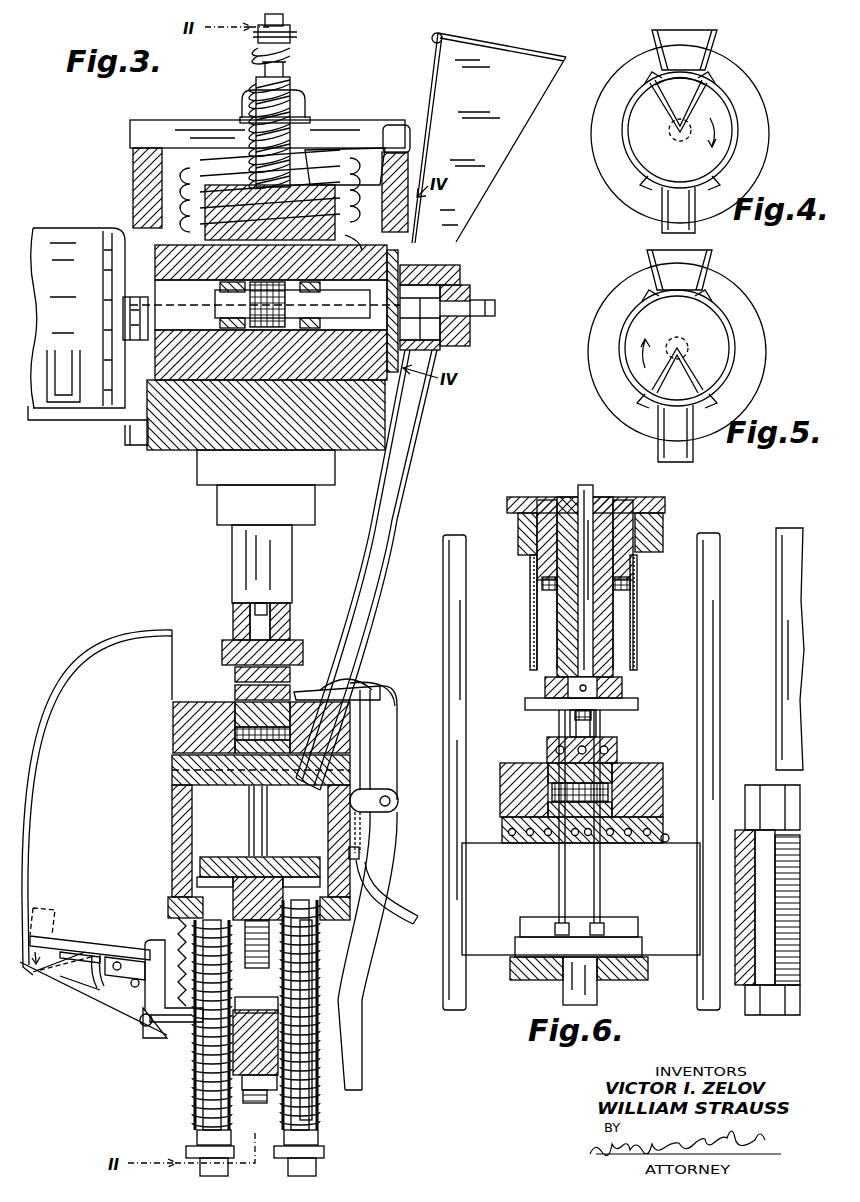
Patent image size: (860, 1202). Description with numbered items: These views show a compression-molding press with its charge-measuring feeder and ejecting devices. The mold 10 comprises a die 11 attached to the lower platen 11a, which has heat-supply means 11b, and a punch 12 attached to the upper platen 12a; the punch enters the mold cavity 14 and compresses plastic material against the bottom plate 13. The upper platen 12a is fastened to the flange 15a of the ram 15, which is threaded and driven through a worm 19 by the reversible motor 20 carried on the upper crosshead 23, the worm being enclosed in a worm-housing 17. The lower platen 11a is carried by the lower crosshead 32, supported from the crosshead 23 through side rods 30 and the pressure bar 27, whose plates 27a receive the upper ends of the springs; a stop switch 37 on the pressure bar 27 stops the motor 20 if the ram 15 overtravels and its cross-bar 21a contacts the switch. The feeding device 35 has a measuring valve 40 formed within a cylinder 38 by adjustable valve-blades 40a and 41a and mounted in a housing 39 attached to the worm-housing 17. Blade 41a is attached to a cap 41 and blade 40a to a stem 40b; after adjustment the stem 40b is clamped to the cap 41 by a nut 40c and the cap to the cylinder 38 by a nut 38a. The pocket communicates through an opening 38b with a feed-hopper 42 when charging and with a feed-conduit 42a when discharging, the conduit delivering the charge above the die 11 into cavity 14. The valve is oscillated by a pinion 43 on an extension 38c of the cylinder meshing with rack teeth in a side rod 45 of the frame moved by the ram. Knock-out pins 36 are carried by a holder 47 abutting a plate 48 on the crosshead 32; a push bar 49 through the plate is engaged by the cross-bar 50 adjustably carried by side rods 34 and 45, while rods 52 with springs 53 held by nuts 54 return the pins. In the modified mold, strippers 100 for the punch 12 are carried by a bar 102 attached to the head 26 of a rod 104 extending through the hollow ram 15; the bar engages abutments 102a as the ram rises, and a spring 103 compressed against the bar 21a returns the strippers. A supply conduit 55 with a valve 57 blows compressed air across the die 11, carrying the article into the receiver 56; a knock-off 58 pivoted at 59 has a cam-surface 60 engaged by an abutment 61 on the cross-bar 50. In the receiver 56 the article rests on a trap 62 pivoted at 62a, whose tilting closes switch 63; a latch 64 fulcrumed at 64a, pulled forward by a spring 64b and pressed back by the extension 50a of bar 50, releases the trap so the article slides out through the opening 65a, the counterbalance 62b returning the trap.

In FIG. 3, the mold 10 is at (158, 737).
In FIG. 6, the mold 10 is at (634, 760).
In FIG. 3, the die 11 is at (173, 720).
In FIG. 6, the die 11 is at (658, 770).
In FIG. 6, the lower platen 11a is at (668, 845).
In FIG. 6, the heat-supply means 11b is at (630, 845).
In FIG. 3, the punch 12 is at (240, 735).
In FIG. 6, the punch 12 is at (547, 752).
In FIG. 3, the upper platen 12a is at (232, 700).
In FIG. 6, the upper platen 12a is at (617, 742).
In FIG. 3, the bottom plate 13 is at (175, 745).
In FIG. 6, the bottom plate 13 is at (537, 845).
In FIG. 3, the mold cavity 14 is at (203, 702).
In FIG. 6, the mold cavity 14 is at (552, 790).
In FIG. 3, the ram 15 is at (282, 560).
In FIG. 6, the ram 15 is at (600, 622).
In FIG. 6, the flange of the ram 15a is at (545, 688).
In FIG. 3, the worm-housing 17 is at (420, 385).
In FIG. 3, the worm 19 is at (271, 367).
In FIG. 3, the reversible motor 20 is at (55, 228).
In FIG. 3, the cross-bar 21a is at (205, 215).
In FIG. 3, the upper crosshead 23 is at (165, 445).
In FIG. 6, the cap 26 is at (660, 500).
In FIG. 3, the pressure bar 27 is at (133, 165).
In FIG. 3, the plates 27a is at (148, 120).
In FIG. 6, the side rods 30 is at (778, 632).
In FIG. 3, the lower crosshead 32 is at (172, 797).
In FIG. 6, the lower crosshead 32 is at (728, 840).
In FIG. 3, the side rod 34 is at (255, 1103).
In FIG. 6, the side rod 34 is at (697, 645).
In FIG. 3, the feeding device 35 is at (497, 325).
In FIG. 3, the knock-out pins 36 is at (266, 815).
In FIG. 6, the knock-out pins 36 is at (595, 877).
In FIG. 3, the stop switch 37 is at (395, 125).
In FIG. 4, the cylinder 38 is at (650, 148).
In FIG. 5, the cylinder 38 is at (705, 328).
In FIG. 3, the nut 38a is at (445, 270).
In FIG. 4, the opening 38b is at (685, 78).
In FIG. 3, the extension of the cylinder 38c is at (365, 340).
In FIG. 3, the housing 39 is at (362, 245).
In FIG. 4, the housing 39 is at (600, 145).
In FIG. 5, the housing 39 is at (620, 290).
In FIG. 4, the measuring valve 40 is at (690, 98).
In FIG. 5, the measuring valve 40 is at (735, 372).
In FIG. 4, the valve-blade 40a is at (712, 118).
In FIG. 5, the valve-blade 40a is at (640, 365).
In FIG. 3, the stem 40b is at (495, 306).
In FIG. 3, the nut 40c is at (470, 292).
In FIG. 3, the cap 41 is at (462, 332).
In FIG. 4, the valve-blade 41a is at (660, 110).
In FIG. 5, the valve-blade 41a is at (700, 350).
In FIG. 3, the feed-hopper 42 is at (472, 205).
In FIG. 3, the feed-conduit 42a is at (398, 490).
In FIG. 4, the feed-conduit 42a is at (662, 215).
In FIG. 5, the feed-conduit 42a is at (658, 440).
In FIG. 3, the pinion 43 is at (268, 285).
In FIG. 6, the side rod 45 is at (462, 588).
In FIG. 3, the knock-out holder 47 is at (230, 857).
In FIG. 6, the knock-out holder 47 is at (520, 947).
In FIG. 3, the plate 48 is at (180, 897).
In FIG. 6, the plate 48 is at (516, 980).
In FIG. 3, the push bar 49 is at (310, 955).
In FIG. 6, the push bar 49 is at (597, 998).
In FIG. 3, the cross-bar 50 is at (198, 1060).
In FIG. 3, the extension 50a is at (195, 1040).
In FIG. 3, the rods 52 is at (305, 1108).
In FIG. 3, the spring 53 is at (192, 1113).
In FIG. 3, the nuts 54 is at (324, 1170).
In FIG. 3, the supply conduit 55 is at (345, 680).
In FIG. 3, the receiver 56 is at (85, 660).
In FIG. 3, the valve 57 is at (403, 932).
In FIG. 3, the knock-off 58 is at (315, 690).
In FIG. 3, the pivot 59 is at (385, 789).
In FIG. 3, the cam-surface 60 is at (358, 1030).
In FIG. 3, the abutment 61 is at (360, 1056).
In FIG. 3, the trap 62 is at (60, 935).
In FIG. 3, the pivot 62a is at (95, 990).
In FIG. 3, the counterbalance 62b is at (118, 995).
In FIG. 3, the switch 63 is at (82, 952).
In FIG. 3, the latch 64 is at (140, 1026).
In FIG. 3, the fulcrum 64a is at (163, 1040).
In FIG. 3, the spring 64b is at (163, 940).
In FIG. 3, the opening 65a is at (93, 993).
In FIG. 6, the strippers 100 is at (572, 720).
In FIG. 6, the stripper holder 102 is at (628, 700).
In FIG. 6, the abutments 102a is at (530, 642).
In FIG. 3, the spring 103 is at (292, 82).
In FIG. 6, the rod 104 is at (590, 487).